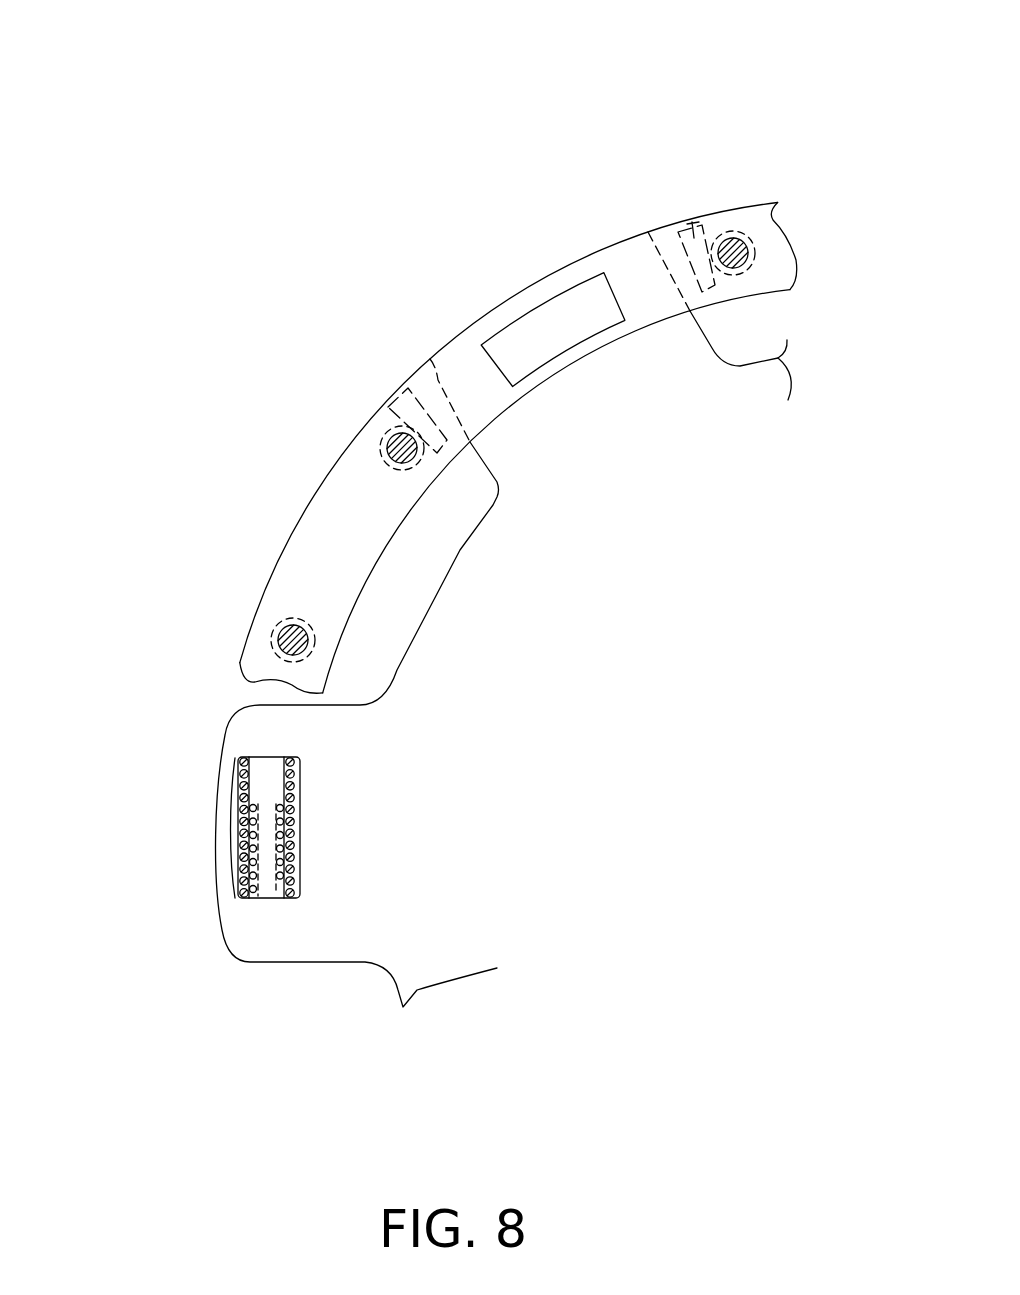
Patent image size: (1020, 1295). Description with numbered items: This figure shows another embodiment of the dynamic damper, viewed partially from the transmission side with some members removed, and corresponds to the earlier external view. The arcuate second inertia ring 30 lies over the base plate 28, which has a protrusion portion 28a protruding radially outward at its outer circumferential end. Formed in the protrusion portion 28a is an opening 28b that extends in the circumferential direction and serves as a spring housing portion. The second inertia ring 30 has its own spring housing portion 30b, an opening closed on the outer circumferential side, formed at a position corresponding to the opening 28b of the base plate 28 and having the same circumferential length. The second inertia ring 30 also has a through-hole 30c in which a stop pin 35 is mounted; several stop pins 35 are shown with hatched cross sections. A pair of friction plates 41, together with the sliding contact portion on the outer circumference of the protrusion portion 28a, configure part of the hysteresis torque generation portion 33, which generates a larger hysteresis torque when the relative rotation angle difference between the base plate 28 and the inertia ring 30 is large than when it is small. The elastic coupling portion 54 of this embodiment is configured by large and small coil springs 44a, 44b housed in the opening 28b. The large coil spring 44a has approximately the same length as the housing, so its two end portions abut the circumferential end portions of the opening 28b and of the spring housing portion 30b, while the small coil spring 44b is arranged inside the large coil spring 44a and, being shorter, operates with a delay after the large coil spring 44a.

The base plate 28 is at (382, 975).
The protrusion portion 28a is at (619, 260).
The opening (spring housing portion) 28b is at (260, 762).
The second inertia ring 30 is at (328, 516).
The spring housing portion 30b is at (542, 299).
The through-hole 30c is at (380, 453).
The hysteresis torque generation portion 33 is at (651, 222).
The stop pin 35 is at (740, 242).
The friction plate 41 is at (692, 226).
The large coil spring 44a is at (250, 798).
The small coil spring 44b is at (253, 857).
The elastic coupling portion 54 is at (198, 877).